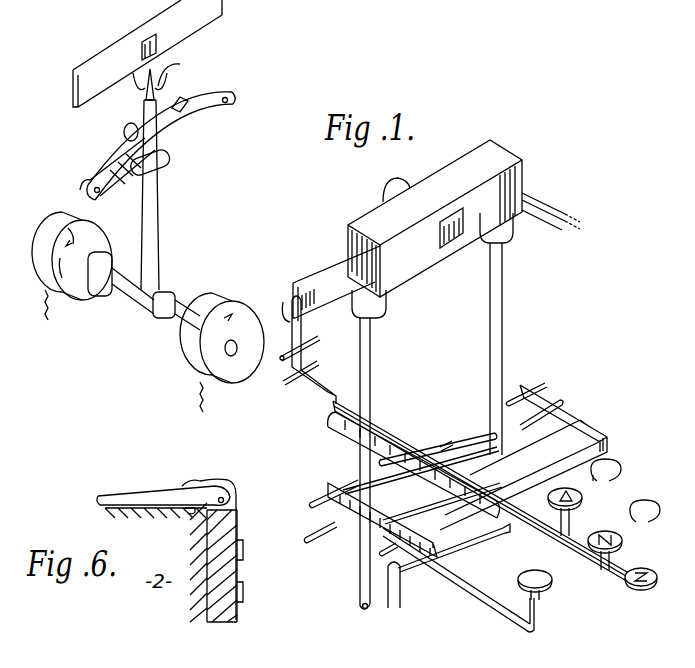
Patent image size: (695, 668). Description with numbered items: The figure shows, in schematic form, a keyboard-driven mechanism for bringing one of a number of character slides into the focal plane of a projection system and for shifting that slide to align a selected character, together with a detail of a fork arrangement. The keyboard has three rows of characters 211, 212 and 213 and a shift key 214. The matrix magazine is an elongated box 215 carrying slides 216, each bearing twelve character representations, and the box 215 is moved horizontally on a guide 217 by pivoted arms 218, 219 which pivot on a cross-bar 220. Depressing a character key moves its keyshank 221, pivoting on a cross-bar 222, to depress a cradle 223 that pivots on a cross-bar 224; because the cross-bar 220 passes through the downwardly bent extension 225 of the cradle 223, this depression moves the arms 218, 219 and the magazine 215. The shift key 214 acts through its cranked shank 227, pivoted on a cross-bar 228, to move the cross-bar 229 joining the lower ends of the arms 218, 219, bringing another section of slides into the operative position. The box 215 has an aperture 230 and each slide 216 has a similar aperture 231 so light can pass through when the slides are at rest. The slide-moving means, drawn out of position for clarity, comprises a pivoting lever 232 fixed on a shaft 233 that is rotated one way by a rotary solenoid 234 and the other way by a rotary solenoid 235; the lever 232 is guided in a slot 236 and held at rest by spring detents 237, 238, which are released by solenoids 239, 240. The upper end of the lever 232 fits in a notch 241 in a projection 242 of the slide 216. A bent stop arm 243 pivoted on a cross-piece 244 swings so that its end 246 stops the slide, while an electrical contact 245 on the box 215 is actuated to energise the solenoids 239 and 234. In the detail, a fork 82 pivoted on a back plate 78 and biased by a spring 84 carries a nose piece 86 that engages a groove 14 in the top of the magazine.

In FIG. 6, the groove 14 is at (240, 523).
In FIG. 6, the back plate 78 is at (222, 578).
In FIG. 6, the fork 82 is at (140, 494).
In FIG. 6, the spring 84 is at (230, 480).
In FIG. 6, the nose piece 86 is at (178, 517).
In FIG. 1, the row of characters 211 is at (583, 505).
In FIG. 1, the row of characters 212 is at (620, 537).
In FIG. 1, the row of characters 213 is at (645, 592).
In FIG. 1, the shift key 214 is at (526, 572).
In FIG. 1, the elongated box 215 is at (496, 155).
In FIG. 1, the slide 216 is at (72, 93).
In FIG. 1, the guide 217 is at (535, 228).
In FIG. 1, the pivoted arm 218 is at (372, 357).
In FIG. 1, the pivoted arm 219 is at (490, 326).
In FIG. 1, the cross-bar 220 is at (466, 450).
In FIG. 1, the keyshank 221 is at (448, 472).
In FIG. 1, the cross-bar 222 is at (444, 446).
In FIG. 1, the cradle 223 is at (390, 493).
In FIG. 1, the cross-bar 224 is at (540, 382).
In FIG. 1, the downwardly bent extension 225 is at (562, 404).
In FIG. 1, the cranked shank 227 is at (470, 604).
In FIG. 1, the cross-bar 228 is at (362, 588).
In FIG. 1, the cross-bar 229 is at (390, 610).
In FIG. 1, the aperture 230 is at (455, 247).
In FIG. 1, the aperture 231 is at (148, 38).
In FIG. 1, the pivoting lever 232 is at (160, 230).
In FIG. 1, the shaft 233 is at (176, 300).
In FIG. 1, the rotary solenoid 234 is at (80, 300).
In FIG. 1, the rotary solenoid 235 is at (195, 346).
In FIG. 1, the slot 236 is at (236, 98).
In FIG. 1, the spring detent 237 is at (115, 158).
In FIG. 1, the spring detent 238 is at (187, 98).
In FIG. 1, the solenoid 239 is at (170, 162).
In FIG. 1, the solenoid 240 is at (133, 124).
In FIG. 1, the notch 241 is at (168, 76).
In FIG. 1, the projection 242 is at (162, 64).
In FIG. 1, the bent stop arm 243 is at (320, 393).
In FIG. 1, the cross-piece 244 is at (318, 360).
In FIG. 1, the electrical contact 245 is at (318, 340).
In FIG. 1, the end of stop arm 246 is at (285, 304).